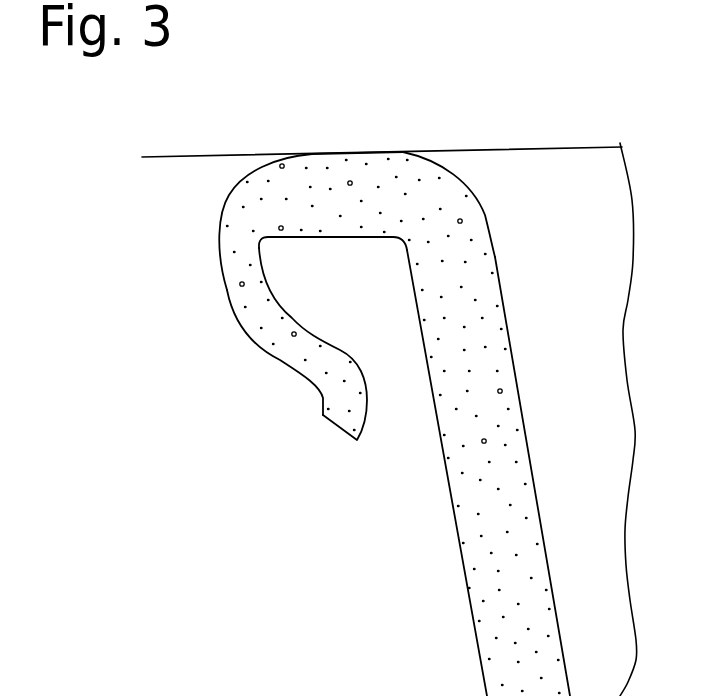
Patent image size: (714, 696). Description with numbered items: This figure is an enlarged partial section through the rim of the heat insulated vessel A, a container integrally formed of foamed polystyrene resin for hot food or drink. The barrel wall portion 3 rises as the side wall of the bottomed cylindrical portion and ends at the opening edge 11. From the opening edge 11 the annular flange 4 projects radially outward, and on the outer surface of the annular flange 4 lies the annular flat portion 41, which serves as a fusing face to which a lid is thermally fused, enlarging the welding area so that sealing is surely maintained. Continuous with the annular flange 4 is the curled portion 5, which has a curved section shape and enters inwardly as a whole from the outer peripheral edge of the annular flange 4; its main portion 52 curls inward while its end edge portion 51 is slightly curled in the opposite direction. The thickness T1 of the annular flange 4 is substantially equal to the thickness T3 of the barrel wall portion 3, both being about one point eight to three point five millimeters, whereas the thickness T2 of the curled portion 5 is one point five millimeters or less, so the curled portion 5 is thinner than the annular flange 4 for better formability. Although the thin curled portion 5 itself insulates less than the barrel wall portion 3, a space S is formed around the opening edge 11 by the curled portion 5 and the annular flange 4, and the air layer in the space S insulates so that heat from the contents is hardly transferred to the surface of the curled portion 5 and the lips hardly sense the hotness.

The barrel wall portion 3 is at (475, 477).
The annular flange 4 is at (312, 185).
The annular flat portion 41 is at (362, 153).
The opening edge 11 is at (495, 257).
The curled portion 5 is at (275, 383).
The end edge portion 51 is at (333, 402).
The main portion 52 is at (260, 337).
The heat insulated vessel A is at (588, 140).
The space S is at (371, 316).
The thickness of the annular flange T1 is at (212, 238).
The thickness of the curled portion T2 is at (312, 272).
The thickness of the barrel wall portion T3 is at (612, 585).